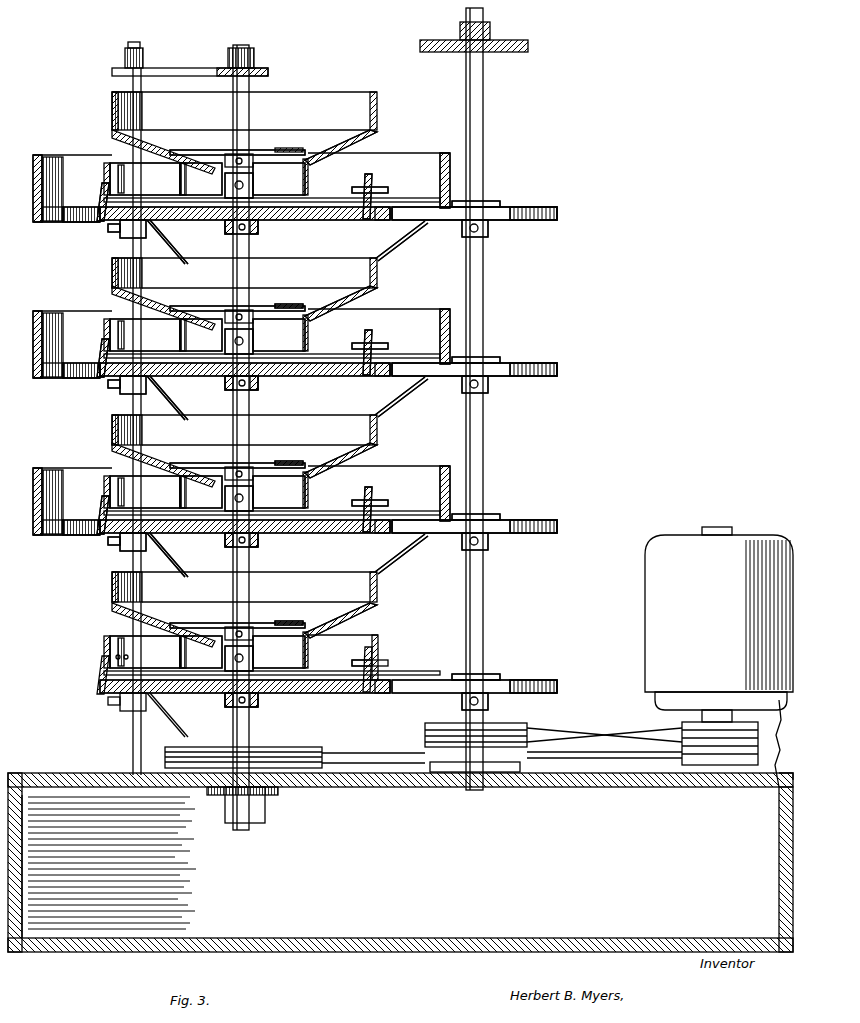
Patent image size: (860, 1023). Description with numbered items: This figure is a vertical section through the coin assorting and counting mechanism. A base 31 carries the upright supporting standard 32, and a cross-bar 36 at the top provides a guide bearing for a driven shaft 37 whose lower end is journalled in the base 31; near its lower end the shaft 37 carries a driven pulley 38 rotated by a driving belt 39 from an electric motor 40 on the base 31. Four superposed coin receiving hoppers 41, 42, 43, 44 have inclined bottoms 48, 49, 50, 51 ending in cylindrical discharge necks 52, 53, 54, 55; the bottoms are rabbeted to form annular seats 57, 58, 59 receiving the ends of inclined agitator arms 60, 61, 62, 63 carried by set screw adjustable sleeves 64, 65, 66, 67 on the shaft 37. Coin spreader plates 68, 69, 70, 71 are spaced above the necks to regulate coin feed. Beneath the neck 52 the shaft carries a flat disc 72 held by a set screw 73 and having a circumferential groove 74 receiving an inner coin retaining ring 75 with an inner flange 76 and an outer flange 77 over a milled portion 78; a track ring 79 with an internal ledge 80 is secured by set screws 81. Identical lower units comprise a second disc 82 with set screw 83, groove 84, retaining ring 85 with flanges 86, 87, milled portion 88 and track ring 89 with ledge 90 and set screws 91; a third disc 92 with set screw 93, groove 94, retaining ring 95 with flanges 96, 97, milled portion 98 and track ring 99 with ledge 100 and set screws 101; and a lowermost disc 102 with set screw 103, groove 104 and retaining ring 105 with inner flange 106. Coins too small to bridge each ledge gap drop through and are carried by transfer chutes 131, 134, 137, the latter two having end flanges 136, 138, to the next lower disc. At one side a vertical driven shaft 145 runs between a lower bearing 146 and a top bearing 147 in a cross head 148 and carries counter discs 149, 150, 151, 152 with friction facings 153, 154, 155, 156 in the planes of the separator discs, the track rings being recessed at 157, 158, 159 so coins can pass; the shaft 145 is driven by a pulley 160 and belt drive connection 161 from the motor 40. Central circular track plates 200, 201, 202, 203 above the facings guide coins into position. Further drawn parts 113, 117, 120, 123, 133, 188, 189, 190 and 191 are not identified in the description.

The base 31 is at (118, 948).
The upright supporting standard 32 is at (141, 52).
The cross-bar 36 is at (206, 68).
The driven shaft 37 is at (252, 104).
The driven pulley 38 is at (188, 747).
The driving belt 39 is at (358, 752).
The electric motor 40 is at (719, 646).
The coin receiving hopper 41 is at (112, 106).
The coin receiving hopper 42 is at (112, 274).
The coin receiving hopper 43 is at (112, 432).
The coin receiving hopper 44 is at (112, 589).
The inclined bottom 48 is at (352, 142).
The inclined bottom 49 is at (352, 296).
The inclined bottom 50 is at (352, 455).
The inclined bottom 51 is at (352, 615).
The discharge neck 52 is at (308, 185).
The discharge neck 53 is at (294, 335).
The discharge neck 54 is at (294, 492).
The discharge neck 55 is at (294, 652).
The annular seat 57 is at (298, 304).
The annular seat 58 is at (296, 461).
The annular seat 59 is at (300, 621).
The inclined agitator arm 60 is at (201, 179).
The inclined agitator arm 61 is at (201, 335).
The inclined agitator arm 62 is at (201, 492).
The inclined agitator arm 63 is at (201, 652).
The set screw adjustable sleeve 64 is at (254, 185).
The set screw adjustable sleeve 65 is at (254, 341).
The set screw adjustable sleeve 66 is at (254, 498).
The set screw adjustable sleeve 67 is at (254, 659).
The coin spreader plate 68 is at (210, 150).
The coin spreader plate 69 is at (210, 306).
The coin spreader plate 70 is at (210, 463).
The coin spreader plate 71 is at (210, 623).
The flat disc 72 is at (312, 221).
The set screw 73 is at (258, 240).
The circumferential groove 74 is at (372, 221).
The inner coin retaining ring 75 is at (376, 176).
The inner annular flange 76 is at (354, 196).
The outer annular flange 77 is at (102, 200).
The milled portion 78 is at (84, 222).
The track ring 79 is at (45, 160).
The internal annular ledge 80 is at (48, 222).
The set screws 81 is at (108, 230).
The second disc 82 is at (312, 377).
The set screw 83 is at (258, 390).
The groove 84 is at (372, 377).
The retaining ring 85 is at (375, 330).
The inner face flange 86 is at (358, 352).
The outer face flange 87 is at (102, 355).
The milled portion 88 is at (86, 378).
The track ring 89 is at (45, 316).
The ledge 90 is at (54, 378).
The set screws 91 is at (108, 386).
The third disc 92 is at (312, 534).
The set screw 93 is at (258, 547).
The groove 94 is at (372, 534).
The retaining ring 95 is at (375, 488).
The inner face flange 96 is at (358, 506).
The outer face flange 97 is at (102, 510).
The milled portion 98 is at (86, 535).
The third track ring 99 is at (45, 474).
The ledge 100 is at (54, 535).
The set screws 101 is at (108, 543).
The fourth disc 102 is at (316, 694).
The set screw 103 is at (258, 706).
The groove 104 is at (372, 694).
The retaining ring 105 is at (379, 648).
The inner face flange 106 is at (362, 672).
The box 113 is at (145, 179).
The box 117 is at (145, 335).
The box 120 is at (145, 492).
The box 123 is at (145, 652).
The transfer chute 131 is at (174, 242).
The brace 133 is at (408, 247).
The transfer chute 134 is at (174, 398).
The end flange 136 is at (393, 417).
The transfer chute 137 is at (174, 555).
The end flange 138 is at (403, 565).
The vertical driven shaft 145 is at (484, 103).
The lower bearing 146 is at (462, 773).
The top bearing 147 is at (490, 34).
The cross head 148 is at (508, 52).
The counter disc 149 is at (530, 221).
The counter disc 150 is at (538, 380).
The counter disc 151 is at (530, 534).
The counter disc 152 is at (530, 694).
The friction facing 153 is at (552, 200).
The friction facing 154 is at (552, 357).
The friction facing 155 is at (552, 514).
The friction facing 156 is at (545, 680).
The recess 157 is at (440, 207).
The recess 158 is at (440, 362).
The recess 159 is at (440, 519).
The pulley 160 is at (458, 724).
The belt drive connection 161 is at (606, 732).
The clamp 188 is at (462, 230).
The clamp 189 is at (465, 393).
The clamp 190 is at (465, 548).
The clamp 191 is at (488, 706).
The track plate 200 is at (506, 196).
The track plate 201 is at (506, 352).
The track plate 202 is at (506, 509).
The track plate 203 is at (498, 674).